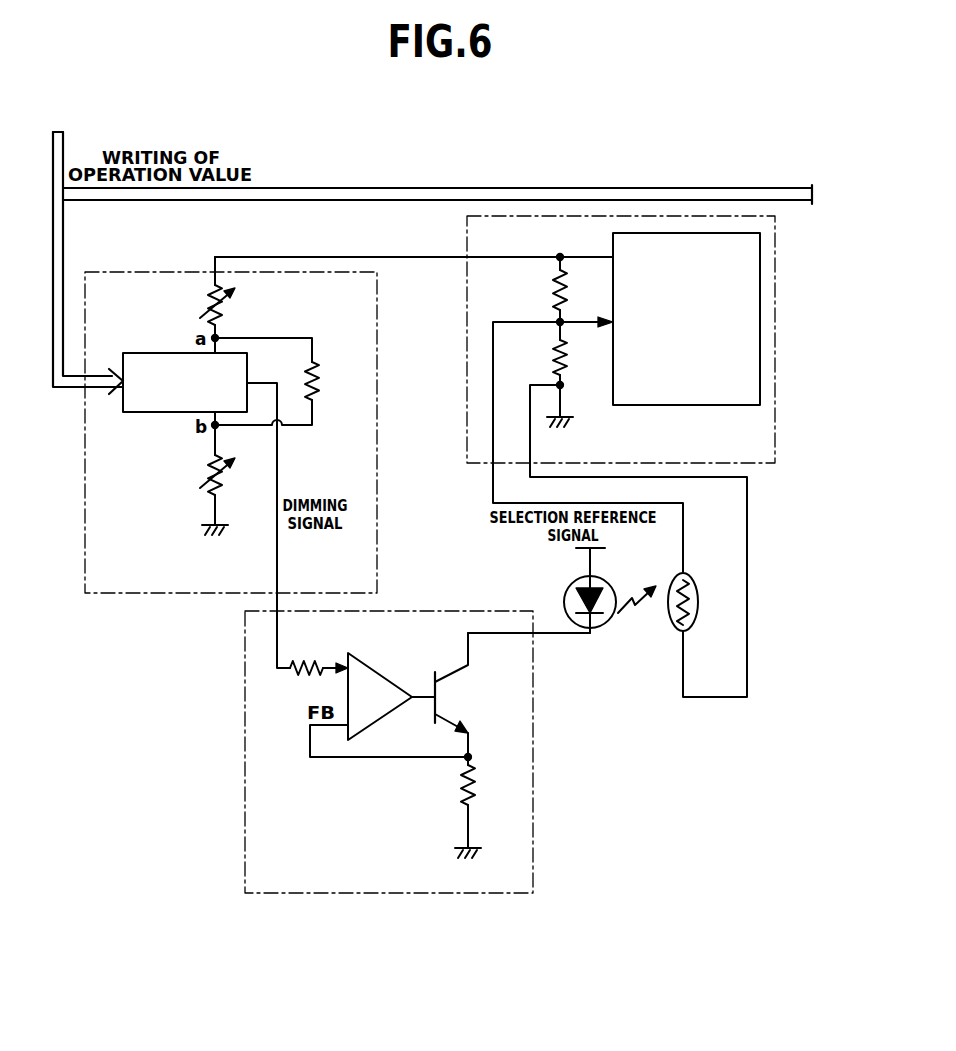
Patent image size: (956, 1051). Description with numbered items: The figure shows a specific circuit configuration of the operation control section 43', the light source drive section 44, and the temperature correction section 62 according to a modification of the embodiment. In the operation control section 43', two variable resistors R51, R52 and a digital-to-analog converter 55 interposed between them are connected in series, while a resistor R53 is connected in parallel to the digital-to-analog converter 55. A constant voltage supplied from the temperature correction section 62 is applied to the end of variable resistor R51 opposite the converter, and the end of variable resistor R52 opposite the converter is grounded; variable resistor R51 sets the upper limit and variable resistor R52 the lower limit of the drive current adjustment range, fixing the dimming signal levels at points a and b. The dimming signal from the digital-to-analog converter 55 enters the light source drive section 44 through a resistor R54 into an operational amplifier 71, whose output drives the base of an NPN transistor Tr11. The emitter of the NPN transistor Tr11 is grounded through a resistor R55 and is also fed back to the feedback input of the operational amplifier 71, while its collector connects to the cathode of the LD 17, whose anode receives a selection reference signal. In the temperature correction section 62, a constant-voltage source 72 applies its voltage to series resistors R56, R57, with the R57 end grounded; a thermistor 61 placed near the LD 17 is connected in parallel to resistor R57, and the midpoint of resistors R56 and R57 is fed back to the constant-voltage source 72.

The digital-to-analog converter 55 is at (168, 353).
The operation control section 43' is at (231, 459).
The light source drive section 44 is at (243, 872).
The operational amplifier 71 is at (378, 667).
The NPN transistor Tr11 is at (457, 696).
The constant-voltage source 72 is at (762, 259).
The temperature correction section 62 is at (775, 437).
The thermistor 61 is at (698, 596).
The LD 17 is at (605, 627).
The variable resistor R51 is at (233, 305).
The variable resistor R52 is at (232, 475).
The resistor R53 is at (334, 381).
The resistor R54 is at (319, 655).
The resistor R55 is at (489, 802).
The resistor R56 is at (537, 290).
The resistor R57 is at (537, 357).